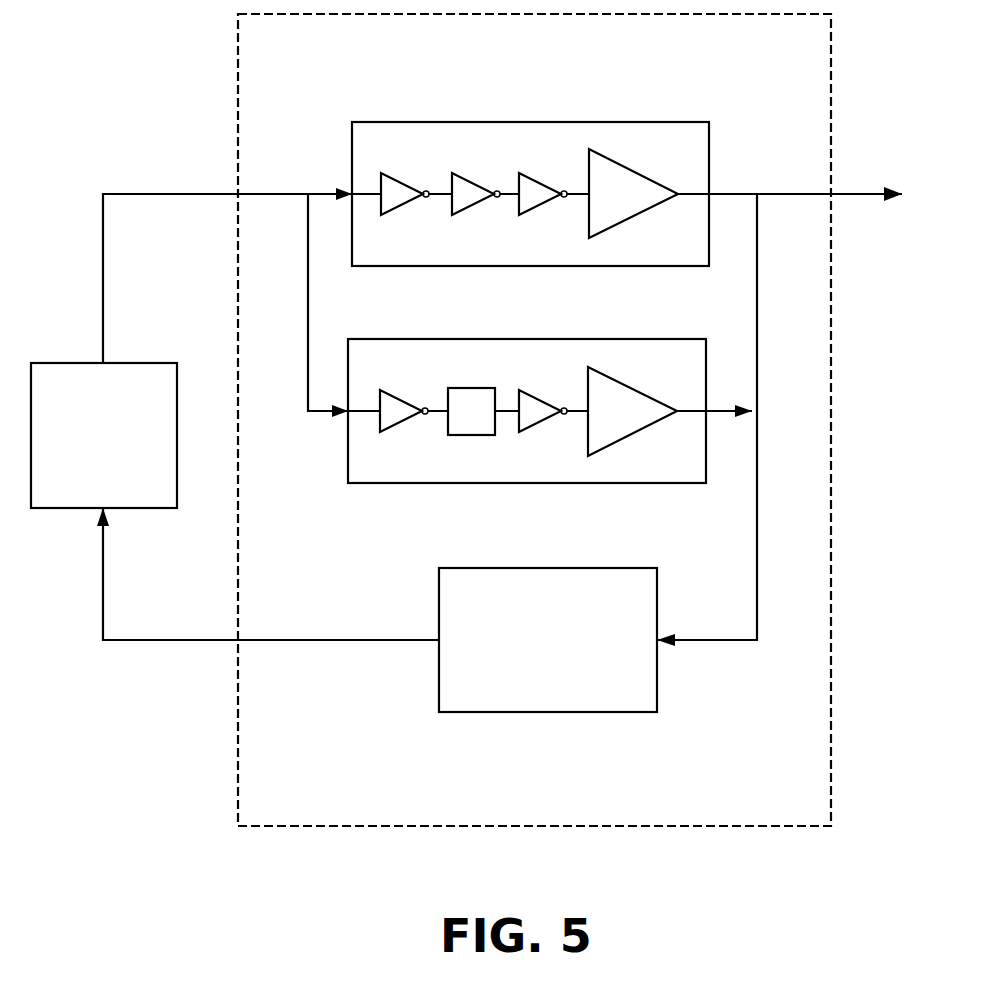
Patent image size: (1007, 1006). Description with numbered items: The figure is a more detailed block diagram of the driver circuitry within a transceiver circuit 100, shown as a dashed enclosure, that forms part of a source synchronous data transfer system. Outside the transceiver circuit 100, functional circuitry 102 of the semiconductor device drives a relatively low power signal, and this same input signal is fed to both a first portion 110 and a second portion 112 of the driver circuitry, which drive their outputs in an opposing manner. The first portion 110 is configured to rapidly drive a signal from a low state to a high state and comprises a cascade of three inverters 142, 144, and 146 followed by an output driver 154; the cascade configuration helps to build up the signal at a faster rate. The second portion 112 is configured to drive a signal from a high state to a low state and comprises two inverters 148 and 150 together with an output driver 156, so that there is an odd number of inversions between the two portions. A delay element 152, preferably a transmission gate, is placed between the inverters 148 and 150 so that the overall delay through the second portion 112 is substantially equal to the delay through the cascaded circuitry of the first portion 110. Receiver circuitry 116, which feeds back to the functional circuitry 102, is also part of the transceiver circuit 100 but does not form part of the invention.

The transceiver circuit 100 is at (390, 828).
The functional circuitry 102 is at (97, 363).
The first portion of driver circuitry 110 is at (540, 122).
The second portion of driver circuitry 112 is at (456, 339).
The receiver circuitry 116 is at (535, 713).
The inverter 142 is at (383, 173).
The inverter 144 is at (454, 173).
The inverter 146 is at (545, 207).
The inverter 148 is at (383, 391).
The inverter 150 is at (545, 424).
The delay element 152 is at (467, 388).
The output driver 154 is at (628, 167).
The output driver 156 is at (619, 382).